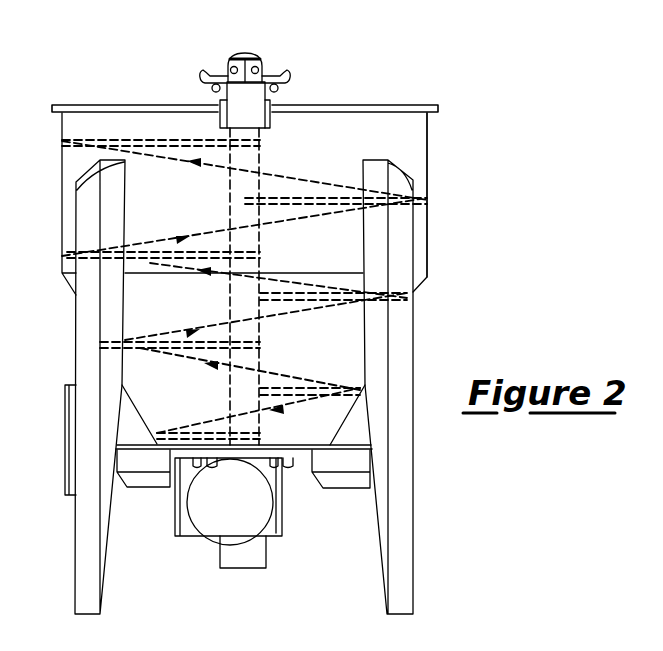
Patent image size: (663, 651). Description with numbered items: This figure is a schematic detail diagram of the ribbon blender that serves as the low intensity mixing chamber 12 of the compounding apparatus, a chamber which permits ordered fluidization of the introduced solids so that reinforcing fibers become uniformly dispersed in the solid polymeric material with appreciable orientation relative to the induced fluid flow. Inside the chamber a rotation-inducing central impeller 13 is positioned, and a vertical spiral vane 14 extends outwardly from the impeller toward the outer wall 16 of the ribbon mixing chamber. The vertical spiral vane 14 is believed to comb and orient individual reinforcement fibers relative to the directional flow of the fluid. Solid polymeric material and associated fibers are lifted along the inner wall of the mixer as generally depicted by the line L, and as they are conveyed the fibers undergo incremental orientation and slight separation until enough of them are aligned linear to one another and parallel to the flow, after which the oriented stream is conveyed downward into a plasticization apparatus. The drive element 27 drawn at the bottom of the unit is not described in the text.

The low intensity mixing chamber 12 is at (462, 177).
The rotation-inducing central impeller 13 is at (267, 98).
The vertical spiral vane 14 is at (320, 180).
The outer wall 16 is at (428, 233).
The solid line L is at (160, 263).
The motor 27 is at (300, 462).